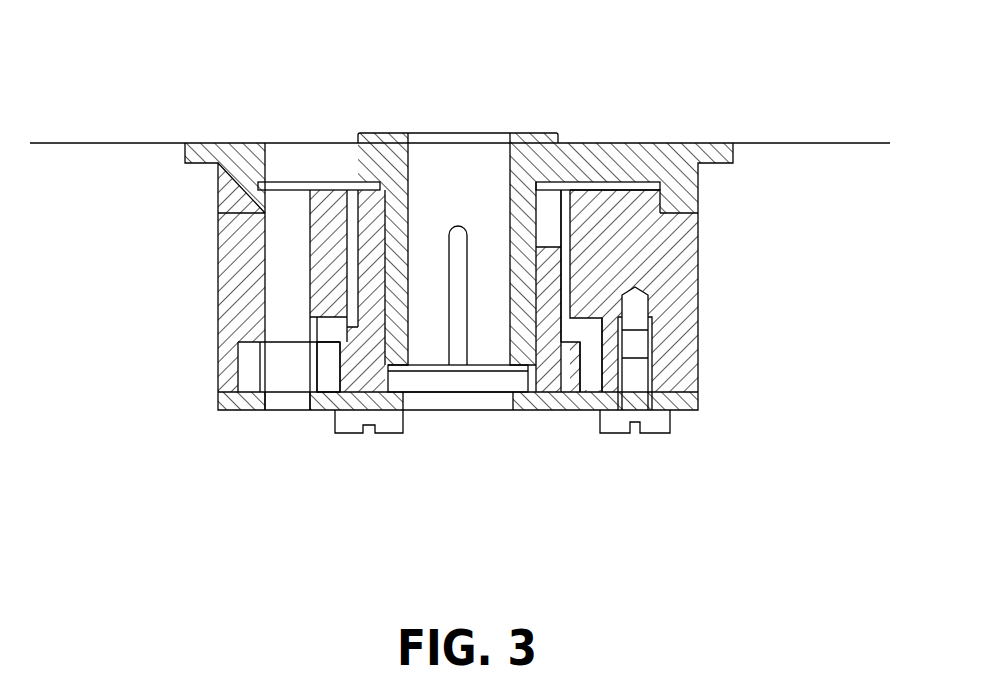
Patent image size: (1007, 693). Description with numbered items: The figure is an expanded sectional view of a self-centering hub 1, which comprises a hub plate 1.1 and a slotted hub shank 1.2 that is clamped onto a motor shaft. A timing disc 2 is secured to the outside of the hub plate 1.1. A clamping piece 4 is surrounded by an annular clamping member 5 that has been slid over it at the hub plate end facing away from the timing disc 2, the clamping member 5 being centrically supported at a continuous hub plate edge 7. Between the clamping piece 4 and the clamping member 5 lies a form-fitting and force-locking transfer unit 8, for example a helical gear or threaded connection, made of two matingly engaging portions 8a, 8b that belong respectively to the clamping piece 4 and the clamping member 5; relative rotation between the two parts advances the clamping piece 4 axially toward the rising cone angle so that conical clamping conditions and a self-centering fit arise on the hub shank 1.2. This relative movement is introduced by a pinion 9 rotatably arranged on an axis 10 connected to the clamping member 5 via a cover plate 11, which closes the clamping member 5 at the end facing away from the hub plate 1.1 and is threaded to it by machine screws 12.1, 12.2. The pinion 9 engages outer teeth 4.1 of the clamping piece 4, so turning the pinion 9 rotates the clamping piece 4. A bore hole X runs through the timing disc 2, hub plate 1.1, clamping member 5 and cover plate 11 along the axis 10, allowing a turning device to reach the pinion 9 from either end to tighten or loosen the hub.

The hub 1 is at (532, 150).
The hub plate 1.1 is at (232, 181).
The slotted hub shank 1.2 is at (423, 323).
The timing disc 2 is at (123, 143).
The clamping piece 4 is at (580, 362).
The outer teeth 4.1 is at (330, 377).
The annular clamping member 5 is at (698, 251).
The hub plate edge 7 is at (700, 180).
The transfer unit 8 is at (545, 215).
The transfer unit portion 8a is at (557, 340).
The transfer unit portion 8b is at (592, 277).
The pinion 9 is at (238, 355).
The axis 10 is at (292, 412).
The cover plate 11 is at (218, 400).
The machine screw 12.1 is at (390, 427).
The machine screw 12.2 is at (649, 434).
The bore hole X is at (282, 215).